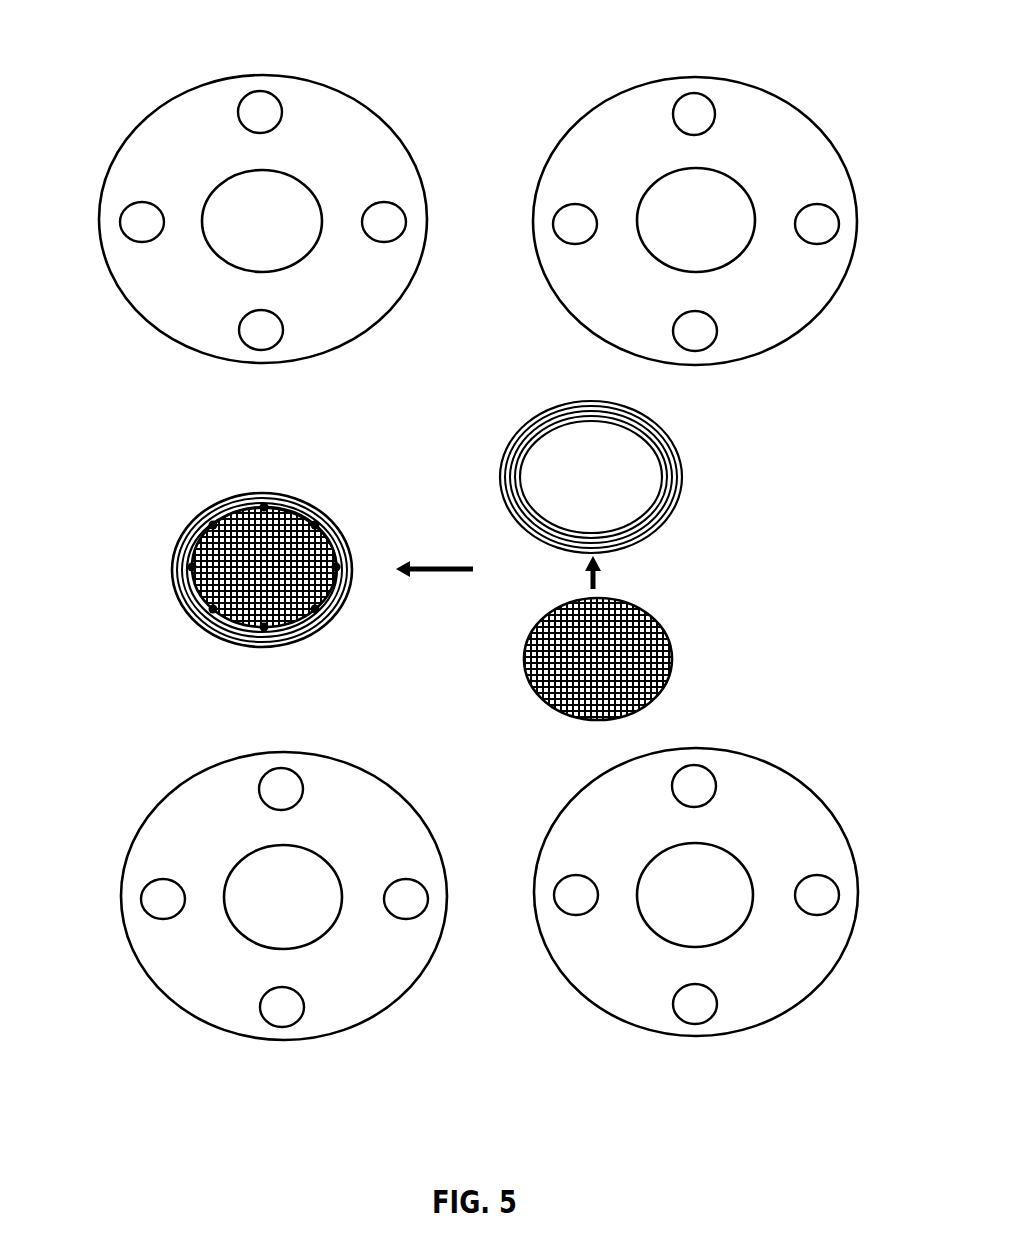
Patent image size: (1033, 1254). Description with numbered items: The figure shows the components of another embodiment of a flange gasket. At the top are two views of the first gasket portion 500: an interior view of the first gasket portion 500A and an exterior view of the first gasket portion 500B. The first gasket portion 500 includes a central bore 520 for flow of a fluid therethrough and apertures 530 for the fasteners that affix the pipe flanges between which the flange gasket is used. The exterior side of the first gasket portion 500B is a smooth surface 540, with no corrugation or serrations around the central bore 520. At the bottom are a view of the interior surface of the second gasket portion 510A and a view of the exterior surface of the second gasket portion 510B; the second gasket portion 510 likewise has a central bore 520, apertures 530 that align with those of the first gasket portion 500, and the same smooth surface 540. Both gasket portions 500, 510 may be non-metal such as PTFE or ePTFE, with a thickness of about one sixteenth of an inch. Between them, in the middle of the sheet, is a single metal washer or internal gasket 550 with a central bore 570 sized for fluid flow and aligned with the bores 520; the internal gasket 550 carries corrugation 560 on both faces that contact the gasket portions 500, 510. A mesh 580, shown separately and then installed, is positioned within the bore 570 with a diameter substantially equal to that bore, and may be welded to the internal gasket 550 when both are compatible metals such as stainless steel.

The first gasket portion 500 is at (150, 85).
The interior view of the first gasket portion 500A is at (368, 279).
The exterior view of the first gasket portion 500B is at (788, 302).
The second gasket portion 510 is at (121, 814).
The interior surface of the second gasket portion 510A is at (367, 970).
The exterior surface of the second gasket portion 510B is at (793, 987).
The central bore 520 is at (273, 218).
The apertures 530 is at (385, 223).
The smooth surface 540 is at (752, 175).
The internal gasket 550 is at (678, 452).
The corrugation 560 is at (678, 502).
The central bore 570 is at (583, 482).
The mesh 580 is at (638, 652).